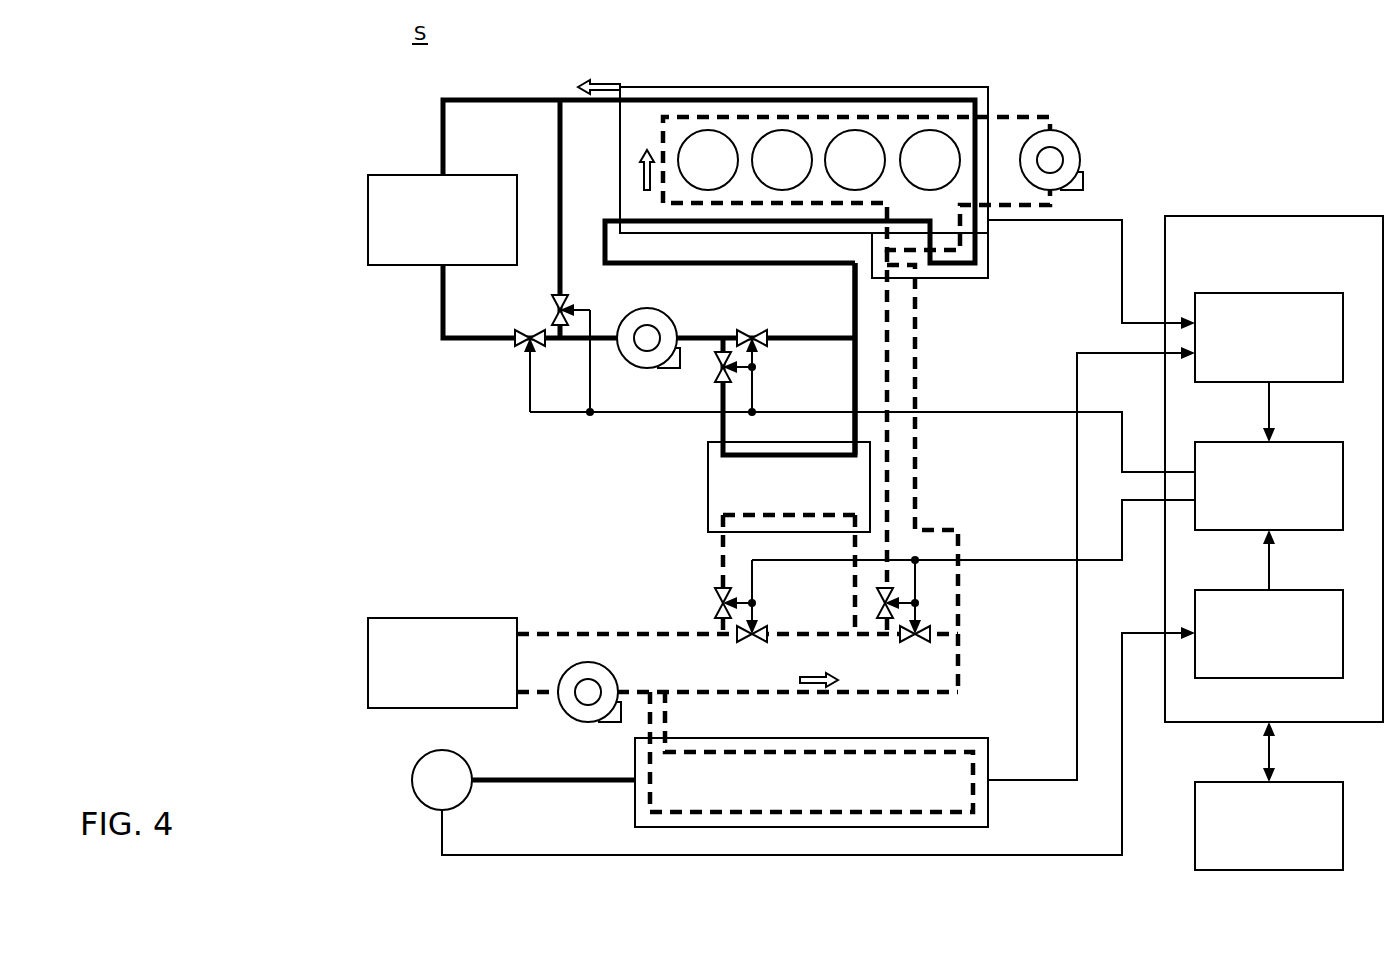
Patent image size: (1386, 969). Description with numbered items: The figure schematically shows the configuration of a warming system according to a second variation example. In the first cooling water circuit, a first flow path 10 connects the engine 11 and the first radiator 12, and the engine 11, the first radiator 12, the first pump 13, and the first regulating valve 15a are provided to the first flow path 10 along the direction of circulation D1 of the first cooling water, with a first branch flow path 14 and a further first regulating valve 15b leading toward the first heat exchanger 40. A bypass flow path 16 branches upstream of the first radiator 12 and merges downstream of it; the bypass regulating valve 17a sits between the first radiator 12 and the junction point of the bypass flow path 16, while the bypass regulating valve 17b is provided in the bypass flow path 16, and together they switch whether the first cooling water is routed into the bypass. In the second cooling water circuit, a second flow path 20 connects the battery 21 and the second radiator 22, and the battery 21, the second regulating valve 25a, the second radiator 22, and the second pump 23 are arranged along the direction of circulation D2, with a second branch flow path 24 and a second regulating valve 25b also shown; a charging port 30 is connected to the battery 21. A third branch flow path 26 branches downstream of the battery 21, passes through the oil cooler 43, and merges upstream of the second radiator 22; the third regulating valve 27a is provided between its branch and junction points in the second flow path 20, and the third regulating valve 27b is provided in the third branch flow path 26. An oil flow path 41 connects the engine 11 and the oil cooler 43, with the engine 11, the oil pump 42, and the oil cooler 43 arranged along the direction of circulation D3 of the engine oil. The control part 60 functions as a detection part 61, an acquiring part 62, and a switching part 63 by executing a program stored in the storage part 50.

The first flow path 10 is at (478, 100).
The engine 11 is at (960, 87).
The first radiator 12 is at (490, 175).
The first pump 13 is at (670, 318).
The first branch flow path 14 is at (852, 350).
The first regulating valve 15a is at (758, 330).
The first regulating valve 15b is at (712, 370).
The bypass flow path 16 is at (562, 173).
The bypass regulating valve 17a is at (520, 345).
The bypass regulating valve 17b is at (548, 305).
The second flow path 20 is at (580, 633).
The battery 21 is at (962, 737).
The second radiator 22 is at (490, 618).
The second pump 23 is at (570, 715).
The second branch flow path 24 is at (722, 545).
The second regulating valve 25a is at (750, 648).
The second regulating valve 25b is at (718, 605).
The third branch flow path 26 is at (948, 530).
The third regulating valve 27a is at (912, 648).
The third regulating valve 27b is at (872, 600).
The charging port 30 is at (420, 805).
The first heat exchanger 40 is at (708, 500).
The oil flow path 41 is at (1005, 115).
The oil pump 42 is at (1063, 130).
The oil cooler 43 is at (990, 265).
The storage part 50 is at (1318, 782).
The control part 60 is at (1318, 216).
The detection part 61 is at (1318, 590).
The acquiring part 62 is at (1318, 293).
The switching part 63 is at (1318, 442).
The direction of circulation D1 is at (602, 80).
The direction of circulation D2 is at (810, 674).
The direction of circulation D3 is at (646, 149).